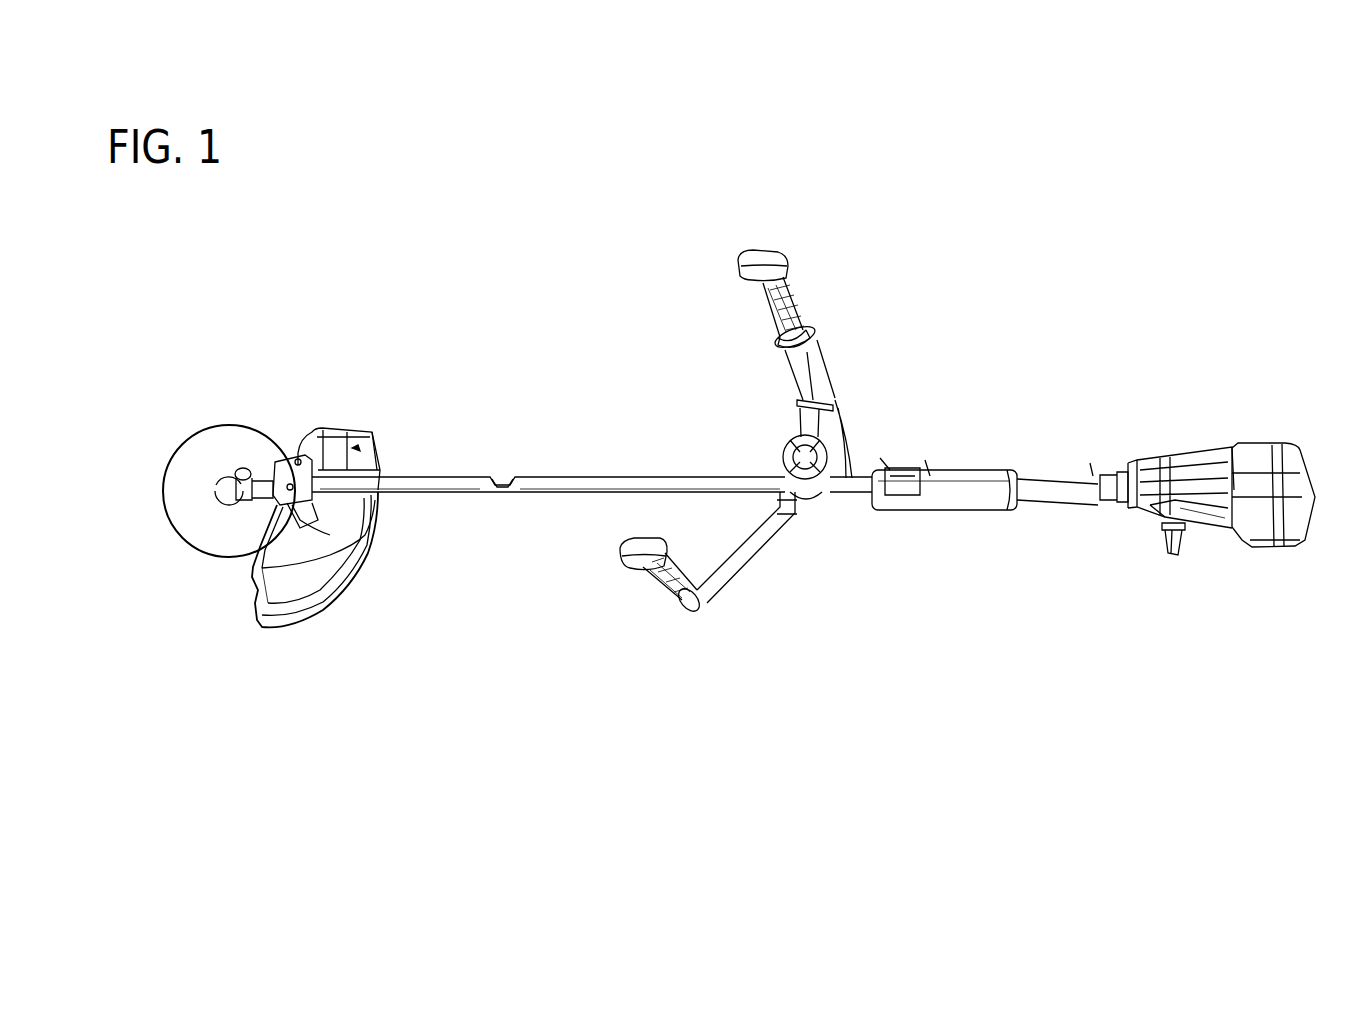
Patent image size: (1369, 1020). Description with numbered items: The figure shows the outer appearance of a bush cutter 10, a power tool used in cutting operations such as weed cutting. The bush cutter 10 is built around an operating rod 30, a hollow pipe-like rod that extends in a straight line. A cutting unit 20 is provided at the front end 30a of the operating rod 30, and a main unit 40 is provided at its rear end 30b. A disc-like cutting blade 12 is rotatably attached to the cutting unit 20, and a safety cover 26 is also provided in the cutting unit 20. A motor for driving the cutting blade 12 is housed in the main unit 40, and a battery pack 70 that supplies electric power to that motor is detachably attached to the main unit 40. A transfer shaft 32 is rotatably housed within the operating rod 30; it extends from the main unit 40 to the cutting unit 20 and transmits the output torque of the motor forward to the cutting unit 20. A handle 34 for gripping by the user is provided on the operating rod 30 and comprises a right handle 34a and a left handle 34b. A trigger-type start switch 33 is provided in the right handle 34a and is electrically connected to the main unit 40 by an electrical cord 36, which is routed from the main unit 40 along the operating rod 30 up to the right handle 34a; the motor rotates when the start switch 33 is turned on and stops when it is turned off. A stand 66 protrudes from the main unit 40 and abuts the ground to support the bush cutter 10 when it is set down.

The bush cutter 10 is at (1237, 197).
The cutting blade 12 is at (204, 440).
The cutting unit 20 is at (245, 466).
The safety cover 26 is at (293, 604).
The operating rod 30 is at (568, 476).
The front end of the operating rod 30a is at (338, 444).
The rear end of the operating rod 30b is at (1076, 470).
The transfer shaft 32 is at (501, 494).
The start switch 33 is at (742, 300).
The handle 34 is at (836, 412).
The right handle 34a is at (805, 300).
The left handle 34b is at (645, 585).
The electrical cord 36 is at (1043, 511).
The main unit 40 is at (1198, 450).
The stand 66 is at (1172, 557).
The battery pack 70 is at (1280, 550).